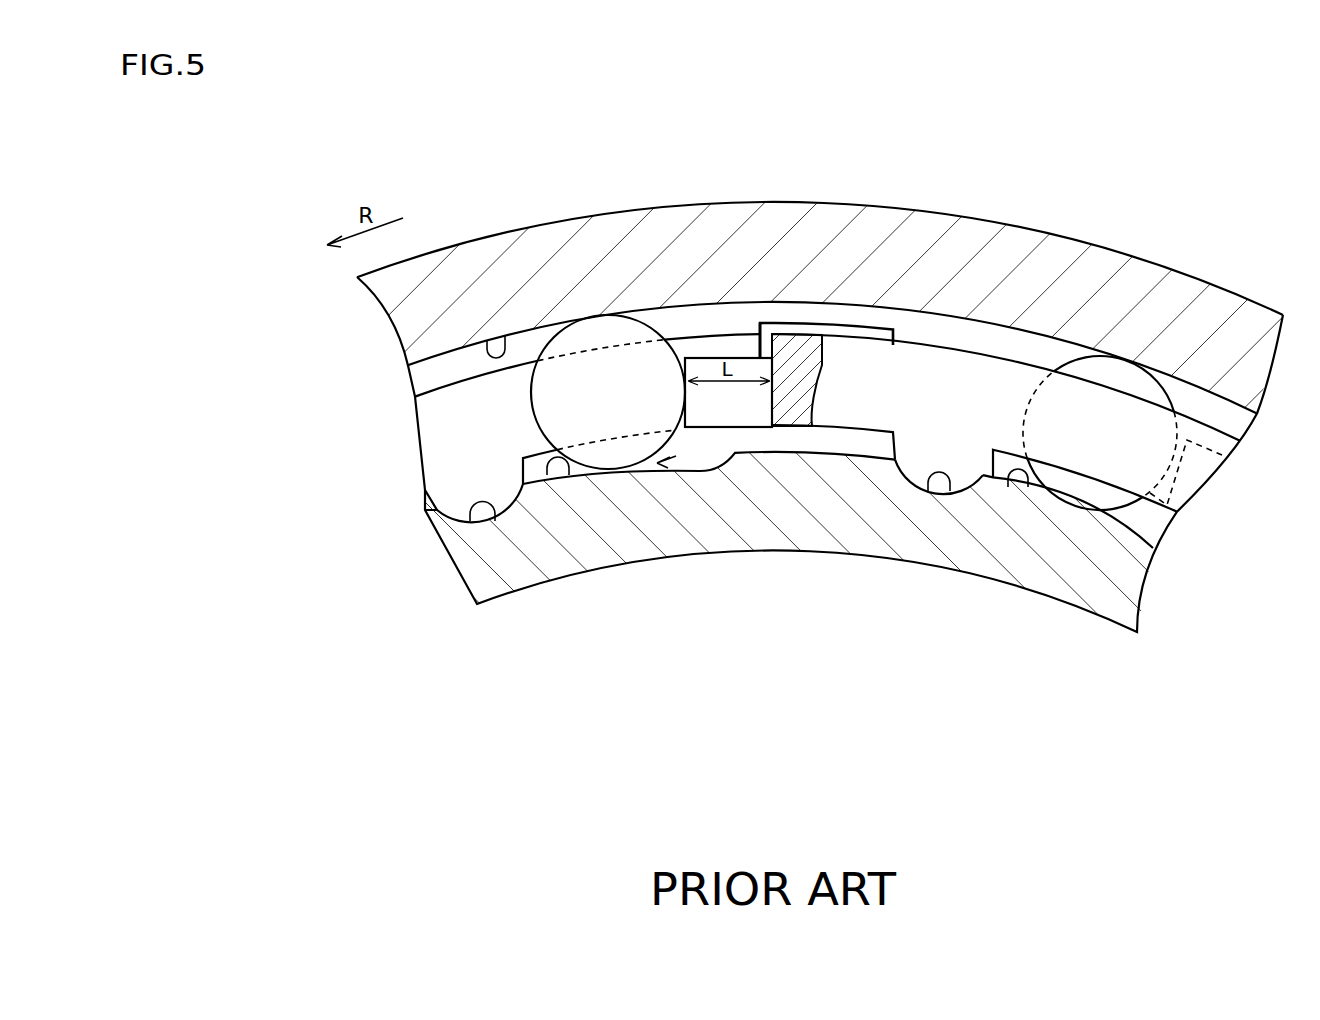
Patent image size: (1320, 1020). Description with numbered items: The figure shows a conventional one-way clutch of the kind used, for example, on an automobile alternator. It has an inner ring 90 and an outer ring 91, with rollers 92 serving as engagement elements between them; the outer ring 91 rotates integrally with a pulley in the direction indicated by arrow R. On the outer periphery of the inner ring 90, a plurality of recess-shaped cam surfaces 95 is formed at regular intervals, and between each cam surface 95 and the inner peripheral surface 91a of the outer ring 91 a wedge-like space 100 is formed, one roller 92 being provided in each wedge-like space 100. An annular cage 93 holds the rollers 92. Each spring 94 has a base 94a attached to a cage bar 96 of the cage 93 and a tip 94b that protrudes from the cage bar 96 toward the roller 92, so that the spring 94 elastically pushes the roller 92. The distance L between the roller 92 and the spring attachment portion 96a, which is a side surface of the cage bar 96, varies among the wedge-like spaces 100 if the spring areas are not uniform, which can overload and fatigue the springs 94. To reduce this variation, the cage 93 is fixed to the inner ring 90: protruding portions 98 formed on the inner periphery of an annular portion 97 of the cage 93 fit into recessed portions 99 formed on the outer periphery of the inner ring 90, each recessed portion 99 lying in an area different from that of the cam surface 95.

The inner ring 90 is at (654, 535).
The outer ring 91 is at (822, 232).
The inner peripheral surface 91a is at (485, 342).
The roller 92 is at (606, 372).
The cage 93 is at (946, 348).
The spring 94 is at (742, 309).
The base 94a is at (752, 355).
The tip 94b is at (663, 380).
The cam surface 95 is at (558, 476).
The cage bar 96 is at (798, 457).
The spring attachment portion 96a is at (778, 420).
The annular portion 97 is at (1000, 400).
The protruding portion 98 is at (921, 448).
The recessed portion 99 is at (472, 515).
The wedge-like space 100 is at (673, 458).